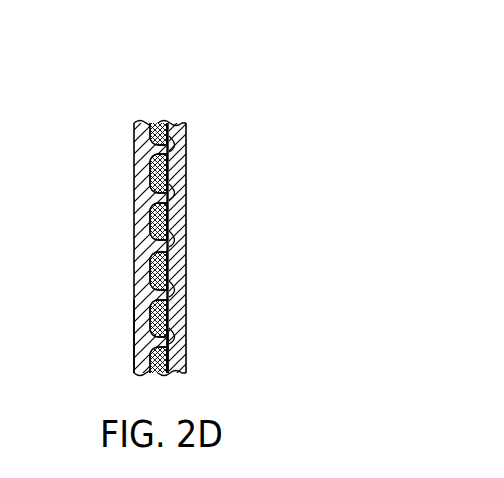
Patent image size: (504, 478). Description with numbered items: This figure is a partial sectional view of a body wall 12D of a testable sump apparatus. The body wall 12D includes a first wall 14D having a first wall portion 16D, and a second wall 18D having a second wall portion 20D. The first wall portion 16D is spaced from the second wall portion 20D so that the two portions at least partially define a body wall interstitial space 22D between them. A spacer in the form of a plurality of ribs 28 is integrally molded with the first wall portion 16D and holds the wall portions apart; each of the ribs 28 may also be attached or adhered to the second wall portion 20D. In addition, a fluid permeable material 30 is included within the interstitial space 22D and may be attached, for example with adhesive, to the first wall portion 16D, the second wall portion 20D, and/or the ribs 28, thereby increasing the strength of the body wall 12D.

The body wall 12D is at (170, 84).
The first wall 14D is at (120, 275).
The first wall portion 16D is at (133, 339).
The second wall 18D is at (200, 270).
The second wall portion 20D is at (187, 343).
The body wall interstitial space 22D is at (170, 372).
The ribs 28 is at (187, 187).
The fluid permeable material 30 is at (186, 233).